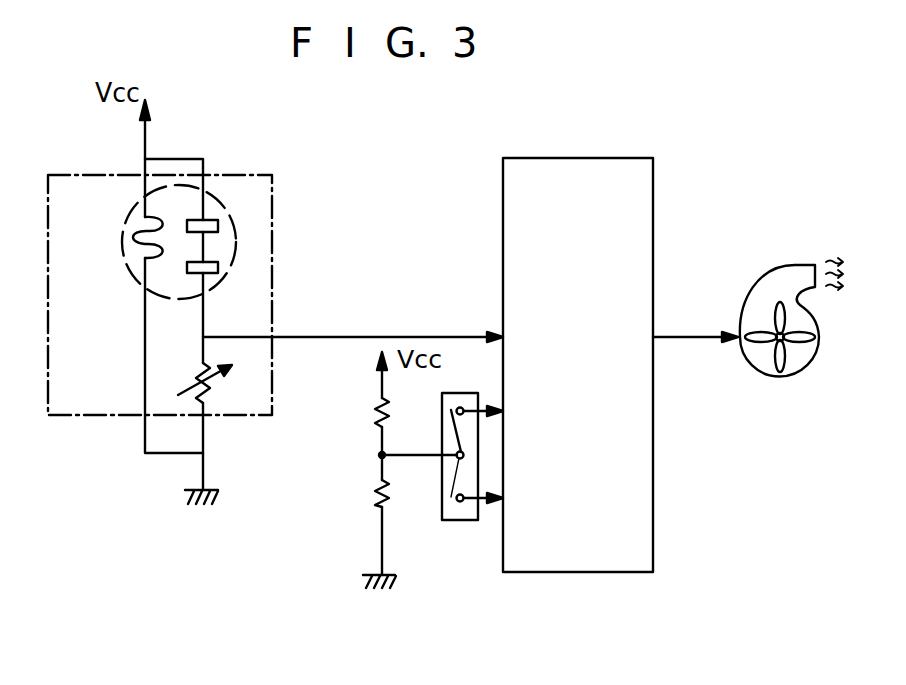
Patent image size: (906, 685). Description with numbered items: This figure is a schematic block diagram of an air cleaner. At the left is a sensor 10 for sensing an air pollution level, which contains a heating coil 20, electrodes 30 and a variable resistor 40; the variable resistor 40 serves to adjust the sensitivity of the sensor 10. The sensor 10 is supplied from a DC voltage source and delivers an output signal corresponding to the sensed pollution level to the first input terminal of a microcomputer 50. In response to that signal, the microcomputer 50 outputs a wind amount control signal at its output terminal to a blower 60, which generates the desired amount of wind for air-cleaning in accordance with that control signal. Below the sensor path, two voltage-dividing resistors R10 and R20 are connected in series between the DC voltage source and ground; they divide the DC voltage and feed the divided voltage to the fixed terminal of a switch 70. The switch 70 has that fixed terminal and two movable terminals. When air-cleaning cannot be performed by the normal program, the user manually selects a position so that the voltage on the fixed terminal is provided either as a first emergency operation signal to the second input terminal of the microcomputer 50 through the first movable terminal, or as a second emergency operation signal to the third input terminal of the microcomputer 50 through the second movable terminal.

The sensor 10 is at (66, 415).
The heating coil 20 is at (153, 228).
The electrodes 30 is at (227, 268).
The variable resistor 40 is at (223, 383).
The microcomputer 50 is at (640, 158).
The blower 60 is at (793, 263).
The switch 70 is at (460, 520).
The voltage-dividing resistor R10 is at (406, 413).
The voltage-dividing resistor R20 is at (406, 494).